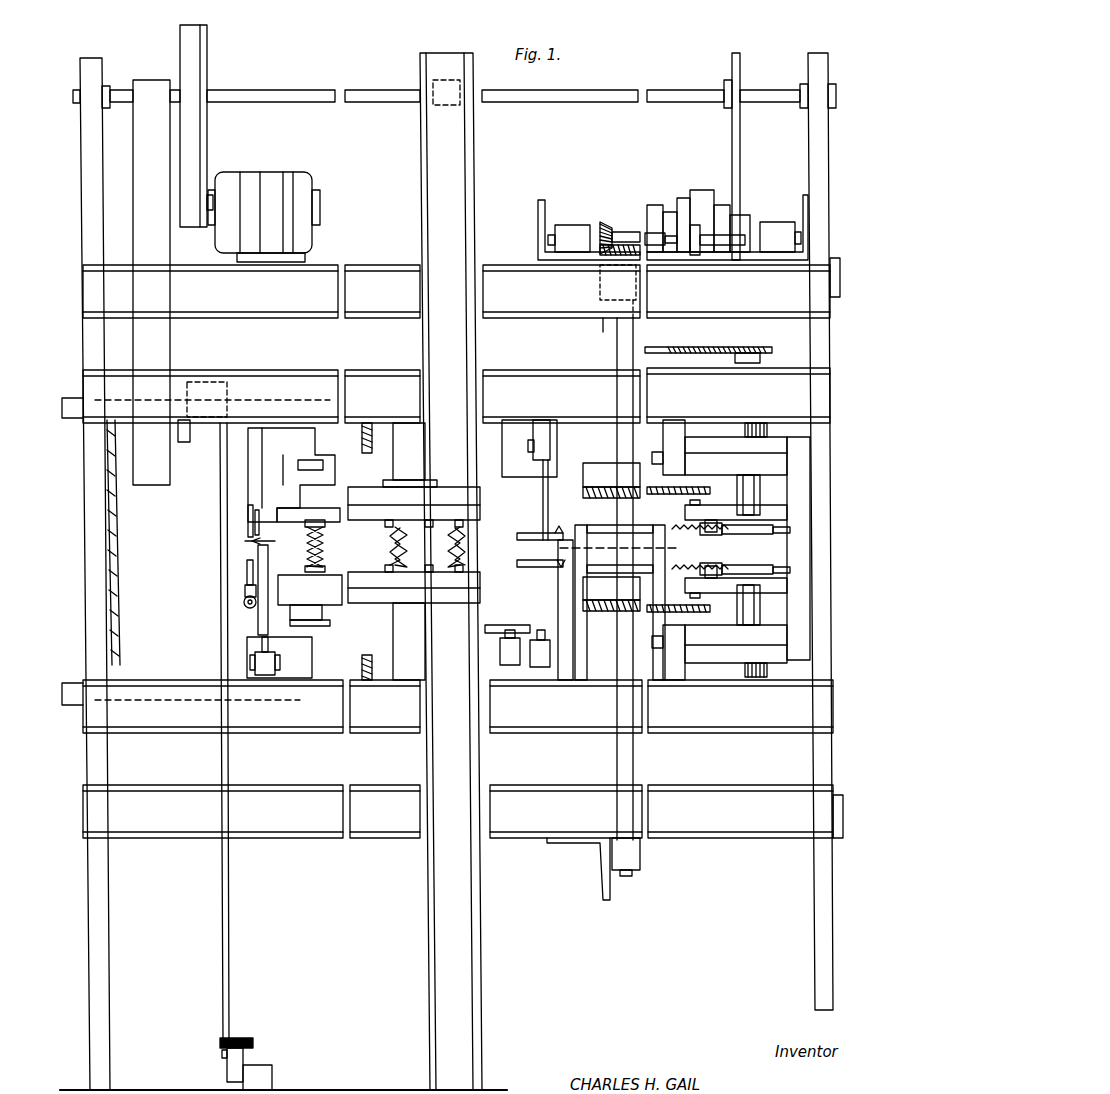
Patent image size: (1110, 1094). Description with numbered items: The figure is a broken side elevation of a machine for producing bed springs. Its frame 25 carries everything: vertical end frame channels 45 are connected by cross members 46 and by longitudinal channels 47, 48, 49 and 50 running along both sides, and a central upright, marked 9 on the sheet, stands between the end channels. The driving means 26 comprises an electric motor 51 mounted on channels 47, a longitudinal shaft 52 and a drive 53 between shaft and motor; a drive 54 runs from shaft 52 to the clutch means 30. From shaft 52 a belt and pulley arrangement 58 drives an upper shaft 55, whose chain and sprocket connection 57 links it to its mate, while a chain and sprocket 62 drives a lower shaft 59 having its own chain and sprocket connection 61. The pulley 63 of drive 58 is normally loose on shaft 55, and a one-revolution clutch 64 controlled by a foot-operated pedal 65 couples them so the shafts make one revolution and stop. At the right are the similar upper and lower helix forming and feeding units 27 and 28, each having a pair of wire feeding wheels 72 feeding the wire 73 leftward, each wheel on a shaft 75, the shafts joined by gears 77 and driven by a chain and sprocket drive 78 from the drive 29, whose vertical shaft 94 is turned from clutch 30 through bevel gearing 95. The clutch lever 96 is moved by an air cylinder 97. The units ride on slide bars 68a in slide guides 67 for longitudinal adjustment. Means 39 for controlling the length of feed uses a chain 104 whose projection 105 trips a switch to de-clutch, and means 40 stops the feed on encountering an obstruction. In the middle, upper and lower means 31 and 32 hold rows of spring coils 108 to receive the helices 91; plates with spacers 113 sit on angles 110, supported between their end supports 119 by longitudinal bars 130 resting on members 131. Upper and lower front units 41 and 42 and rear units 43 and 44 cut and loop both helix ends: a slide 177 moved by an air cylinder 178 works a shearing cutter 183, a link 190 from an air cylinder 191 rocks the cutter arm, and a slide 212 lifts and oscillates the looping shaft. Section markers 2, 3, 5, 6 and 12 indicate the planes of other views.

The section line 2- 2 is at (645, 562).
The section line 3- 3 is at (800, 550).
The section line 5- 5 is at (512, 562).
The section line 6- 6 is at (562, 556).
The central frame post 9 is at (452, 230).
The section line 12- 12 is at (375, 548).
The frame 25 is at (372, 264).
The driving means 26 is at (276, 200).
The upper helix forming and feeding unit 27 is at (752, 554).
The lower helix forming and feeding unit 28 is at (719, 639).
The drive 29 is at (612, 440).
The clutch means 30 is at (673, 228).
The upper means 31 is at (460, 486).
The lower means 32 is at (388, 605).
The means for controlling the length of feed 39 is at (723, 469).
The means responsive to an obstruction 40 is at (640, 530).
The upper front unit 41 is at (563, 478).
The lower front unit 42 is at (505, 632).
The upper rear unit 43 is at (245, 518).
The lower rear unit 44 is at (240, 612).
The vertical end frame channel 45 is at (92, 232).
The cross member 46 is at (828, 288).
The longitudinal channel 47 is at (385, 322).
The longitudinal channel 48 is at (530, 362).
The longitudinal channel 49 is at (522, 736).
The longitudinal channel 50 is at (318, 840).
The electric motor 51 is at (312, 188).
The longitudinal shaft 52 is at (392, 80).
The drive 53 is at (200, 88).
The drive 54 is at (732, 124).
The upper shaft 55 is at (312, 400).
The chain and sprocket connection 57 is at (362, 448).
The belt and pulley arrangement 58 is at (168, 334).
The lower shaft 59 is at (300, 702).
The chain and sprocket connection 61 is at (368, 660).
The chain and sprocket 62 is at (116, 508).
The pulley 63 is at (172, 470).
The one-revolution clutch 64 is at (190, 440).
The foot-operated pedal 65 is at (245, 1040).
The slide guide 67 is at (672, 670).
The slide bar 68a is at (772, 677).
The wire feeding wheel 72 is at (760, 534).
The wire 73 is at (843, 530).
The shaft 75 is at (762, 360).
The gear 77 is at (756, 422).
The chain and sprocket drive 78 is at (692, 488).
The helix 91 is at (562, 534).
The vertical shaft 94 is at (620, 650).
The bevel gearing 95 is at (610, 230).
The clutch lever 96 is at (657, 246).
The air cylinder 97 is at (725, 246).
The chain 104 is at (752, 347).
The projection 105 is at (688, 340).
The spring coil 108 is at (305, 535).
The angle 110 is at (443, 608).
The spacer 113 is at (428, 530).
The end support 119 is at (407, 593).
The longitudinal bar 130 is at (378, 486).
The member 131 is at (426, 440).
The slide 177 is at (244, 590).
The air cylinder 178 is at (250, 615).
The shearing cutter 183 is at (240, 545).
The link 190 is at (540, 645).
The air cylinder 191 is at (262, 662).
The slide 212 is at (318, 462).